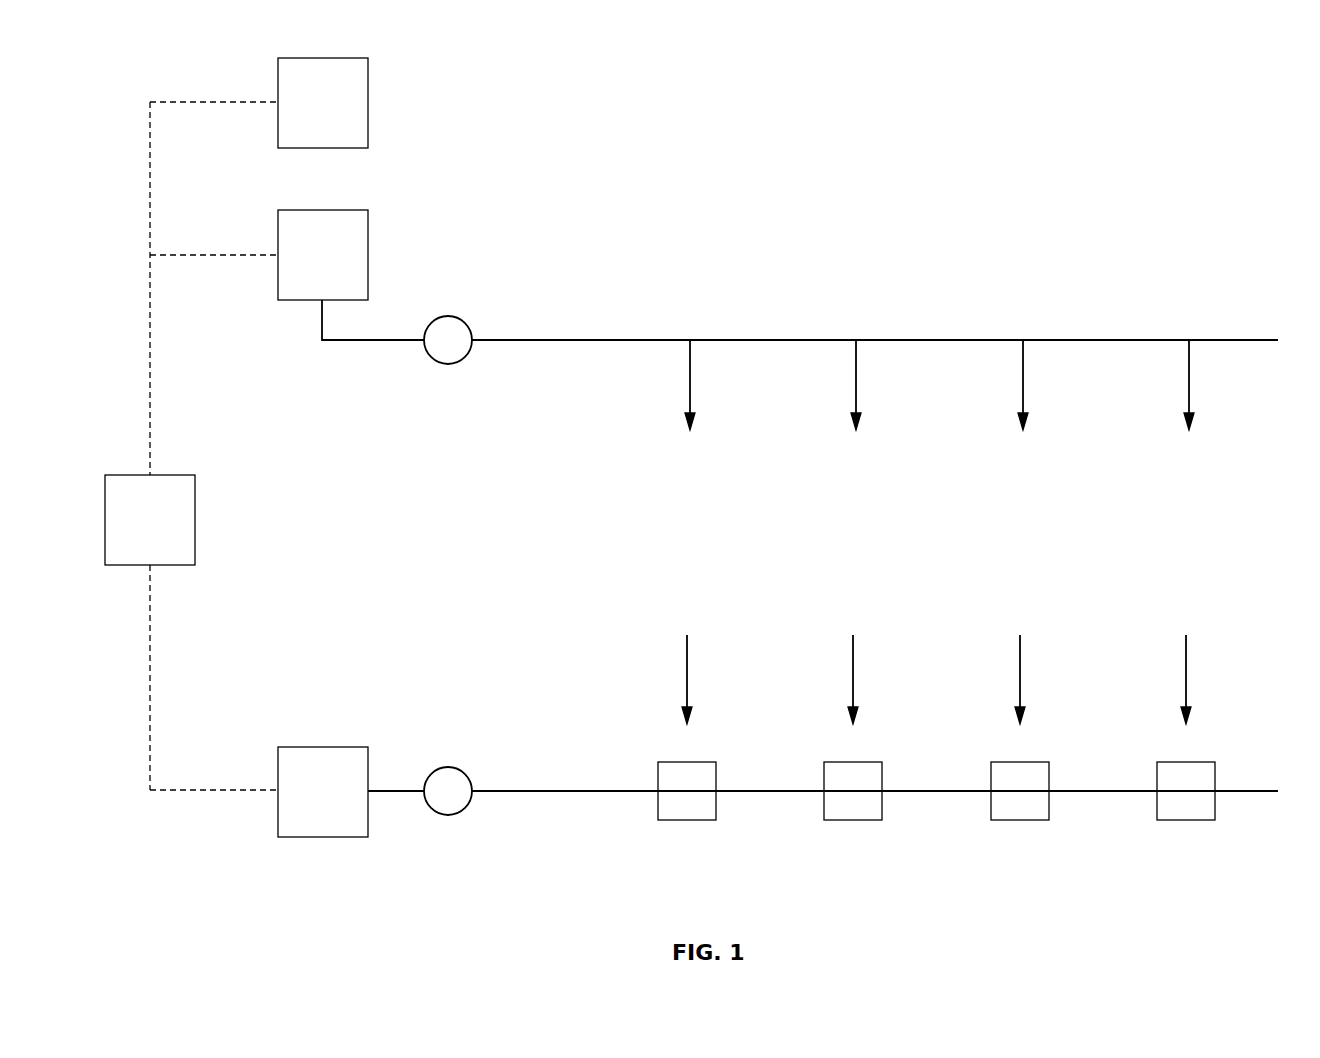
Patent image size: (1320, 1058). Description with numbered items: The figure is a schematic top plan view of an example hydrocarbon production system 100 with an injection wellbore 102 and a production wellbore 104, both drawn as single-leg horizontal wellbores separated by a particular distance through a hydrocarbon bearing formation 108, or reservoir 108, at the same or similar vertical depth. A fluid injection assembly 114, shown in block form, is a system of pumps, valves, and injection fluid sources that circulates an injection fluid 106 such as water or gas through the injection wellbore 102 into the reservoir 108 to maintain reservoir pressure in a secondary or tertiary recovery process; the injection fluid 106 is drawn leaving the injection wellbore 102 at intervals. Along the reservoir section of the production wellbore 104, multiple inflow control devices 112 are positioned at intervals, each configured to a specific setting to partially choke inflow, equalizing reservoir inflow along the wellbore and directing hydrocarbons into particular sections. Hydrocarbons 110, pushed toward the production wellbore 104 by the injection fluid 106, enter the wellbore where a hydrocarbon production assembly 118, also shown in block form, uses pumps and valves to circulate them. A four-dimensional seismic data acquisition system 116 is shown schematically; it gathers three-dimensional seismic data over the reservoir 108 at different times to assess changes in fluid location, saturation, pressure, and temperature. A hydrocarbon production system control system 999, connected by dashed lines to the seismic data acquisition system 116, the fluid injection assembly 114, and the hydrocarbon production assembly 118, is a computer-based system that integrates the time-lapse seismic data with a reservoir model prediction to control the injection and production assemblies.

The hydrocarbon production system 100 is at (1193, 76).
The injection wellbore 102 is at (1097, 337).
The production wellbore 104 is at (585, 794).
The injection fluid 106 is at (690, 383).
The hydrocarbon bearing formation 108 is at (1228, 557).
The hydrocarbons 110 is at (687, 681).
The inflow control devices 112 is at (690, 821).
The fluid injection assembly 114 is at (345, 268).
The 4D seismic data acquisition system 116 is at (345, 115).
The hydrocarbon production assembly 118 is at (345, 805).
The hydrocarbon production system control system 999 is at (172, 533).